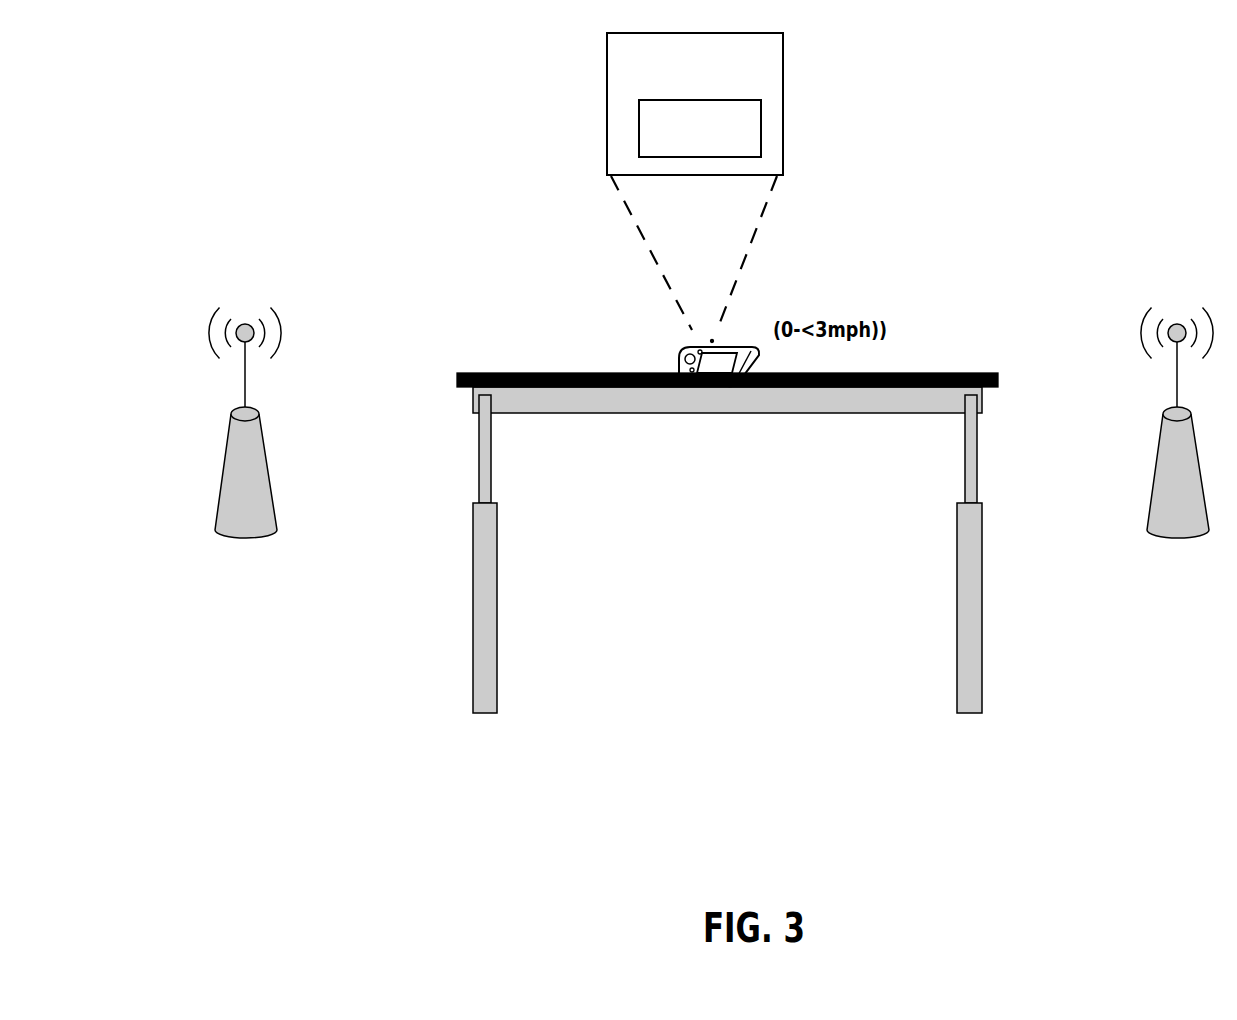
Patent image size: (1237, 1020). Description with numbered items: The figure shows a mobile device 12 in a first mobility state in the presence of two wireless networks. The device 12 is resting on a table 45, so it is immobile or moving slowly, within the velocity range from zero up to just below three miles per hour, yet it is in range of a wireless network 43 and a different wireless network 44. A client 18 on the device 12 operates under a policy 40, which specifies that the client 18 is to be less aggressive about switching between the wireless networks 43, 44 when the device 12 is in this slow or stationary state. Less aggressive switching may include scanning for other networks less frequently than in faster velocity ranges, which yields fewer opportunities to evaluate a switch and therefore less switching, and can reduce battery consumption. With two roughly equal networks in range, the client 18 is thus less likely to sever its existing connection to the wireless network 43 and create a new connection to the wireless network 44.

The device 12 is at (682, 359).
The client 18 is at (613, 48).
The policy 40 is at (637, 130).
The wireless network 43 is at (216, 445).
The wireless network 44 is at (1160, 442).
The table 45 is at (473, 580).